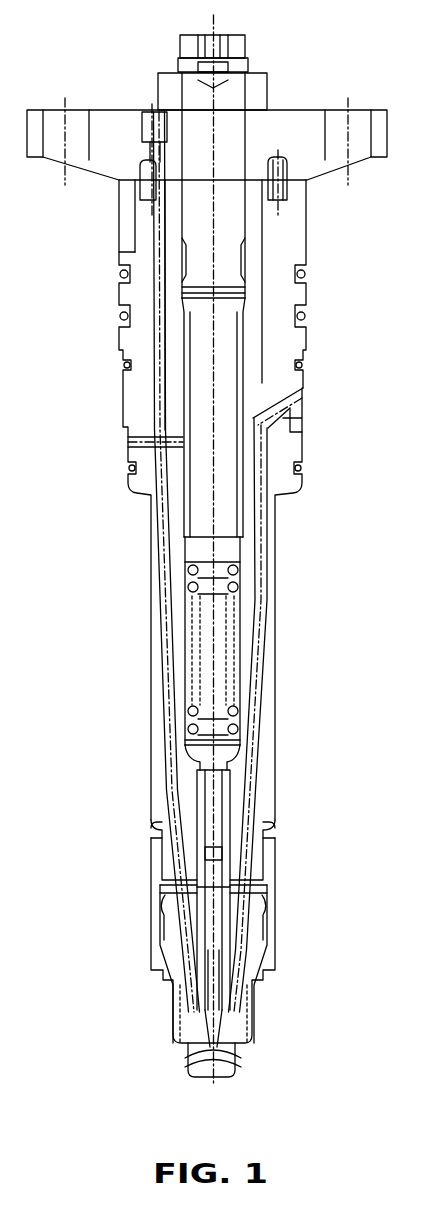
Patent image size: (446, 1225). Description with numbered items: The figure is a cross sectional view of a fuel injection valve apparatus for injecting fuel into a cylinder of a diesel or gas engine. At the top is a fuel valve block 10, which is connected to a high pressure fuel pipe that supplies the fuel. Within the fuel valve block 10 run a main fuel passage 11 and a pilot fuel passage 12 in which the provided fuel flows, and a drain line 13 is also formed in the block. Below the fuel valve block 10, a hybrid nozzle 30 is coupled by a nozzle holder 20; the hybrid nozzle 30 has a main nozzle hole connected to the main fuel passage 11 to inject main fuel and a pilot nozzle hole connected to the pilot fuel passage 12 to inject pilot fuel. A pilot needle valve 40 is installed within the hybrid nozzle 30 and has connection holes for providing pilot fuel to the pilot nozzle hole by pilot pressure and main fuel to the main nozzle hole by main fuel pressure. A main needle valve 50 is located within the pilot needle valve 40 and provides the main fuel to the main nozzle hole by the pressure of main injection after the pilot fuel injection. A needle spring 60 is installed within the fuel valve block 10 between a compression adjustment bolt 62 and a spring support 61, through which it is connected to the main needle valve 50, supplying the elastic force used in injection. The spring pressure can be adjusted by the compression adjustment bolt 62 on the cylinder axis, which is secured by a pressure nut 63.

The fuel valve block 10 is at (280, 545).
The main fuel passage 11 is at (140, 112).
The pilot fuel passage 12 is at (303, 405).
The drain line 13 is at (128, 440).
The nozzle holder 20 is at (280, 875).
The hybrid nozzle 30 is at (188, 1073).
The pilot needle valve 40 is at (220, 1019).
The main needle valve 50 is at (210, 925).
The needle spring 60 is at (237, 657).
The spring support 61 is at (190, 752).
The compression adjustment bolt 62 is at (200, 377).
The pressure nut 63 is at (258, 78).